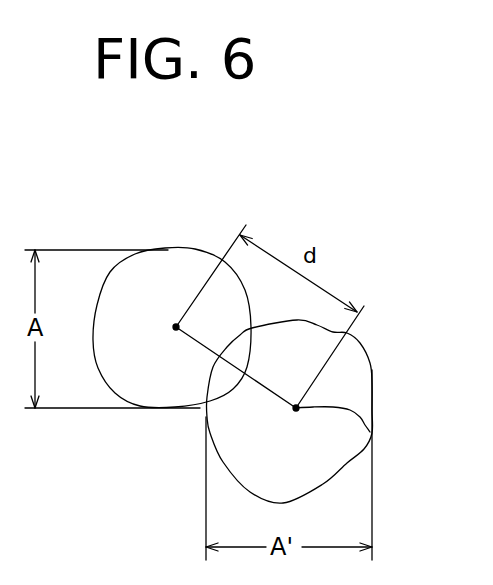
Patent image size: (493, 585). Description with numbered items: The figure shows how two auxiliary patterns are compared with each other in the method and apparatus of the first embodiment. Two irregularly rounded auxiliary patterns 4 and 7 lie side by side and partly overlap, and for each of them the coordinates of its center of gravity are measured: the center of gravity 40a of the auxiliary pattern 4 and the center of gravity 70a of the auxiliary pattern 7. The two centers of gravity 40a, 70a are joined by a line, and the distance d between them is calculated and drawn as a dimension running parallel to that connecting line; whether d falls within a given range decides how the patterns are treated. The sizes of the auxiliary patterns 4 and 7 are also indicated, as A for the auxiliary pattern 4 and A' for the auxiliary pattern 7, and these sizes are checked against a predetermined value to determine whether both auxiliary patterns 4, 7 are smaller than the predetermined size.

The auxiliary pattern 4 is at (171, 246).
The center of gravity 40a is at (173, 334).
The auxiliary pattern 7 is at (372, 376).
The center of gravity 70a is at (370, 432).